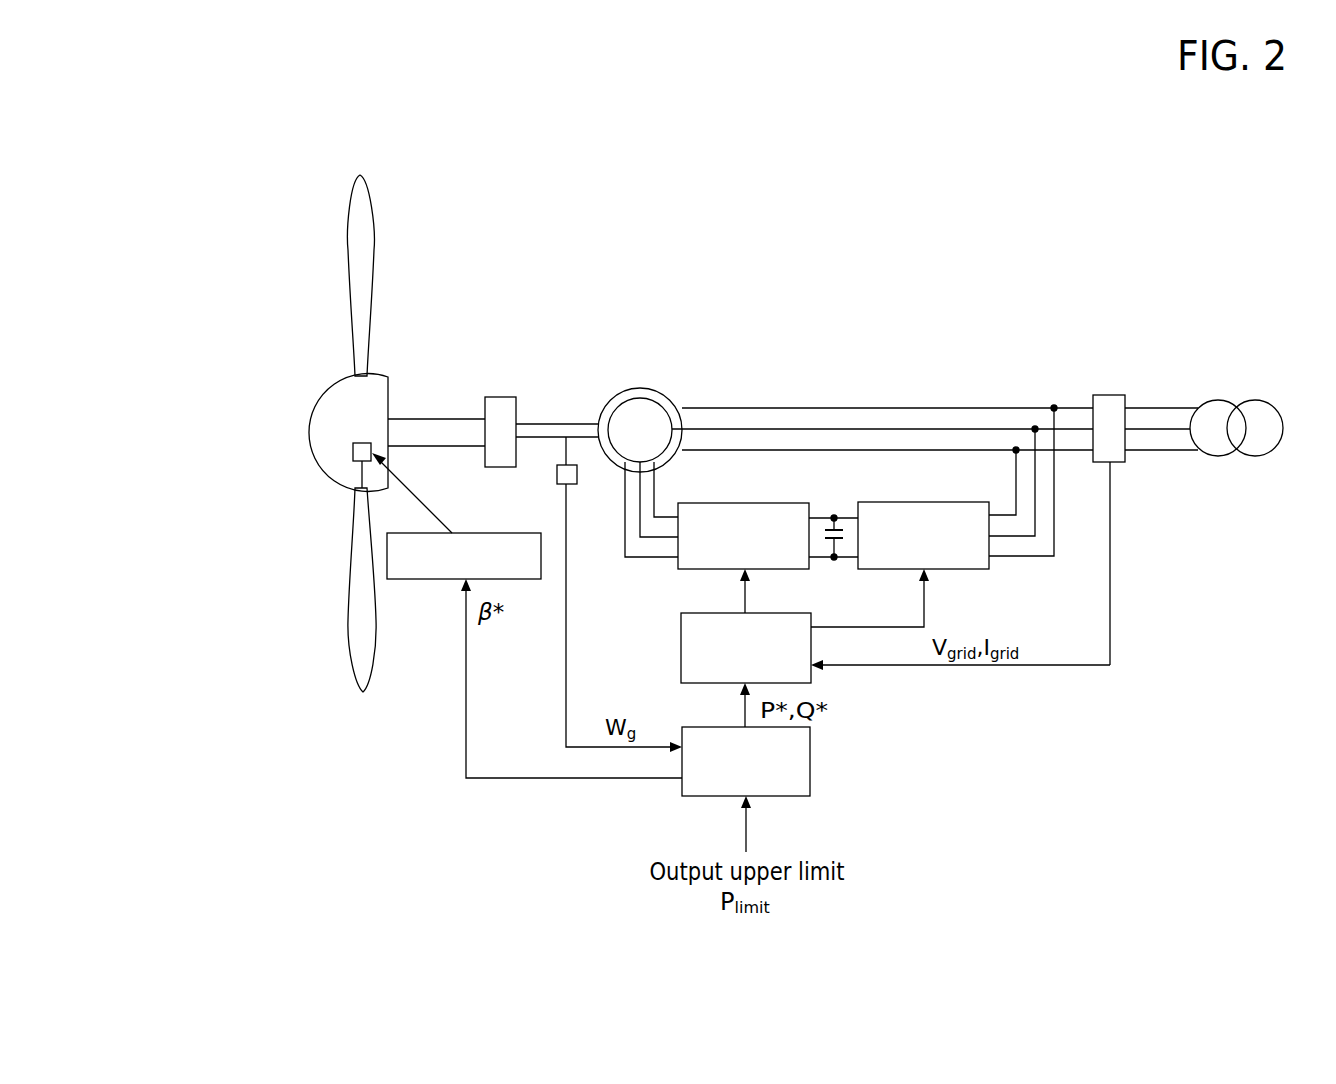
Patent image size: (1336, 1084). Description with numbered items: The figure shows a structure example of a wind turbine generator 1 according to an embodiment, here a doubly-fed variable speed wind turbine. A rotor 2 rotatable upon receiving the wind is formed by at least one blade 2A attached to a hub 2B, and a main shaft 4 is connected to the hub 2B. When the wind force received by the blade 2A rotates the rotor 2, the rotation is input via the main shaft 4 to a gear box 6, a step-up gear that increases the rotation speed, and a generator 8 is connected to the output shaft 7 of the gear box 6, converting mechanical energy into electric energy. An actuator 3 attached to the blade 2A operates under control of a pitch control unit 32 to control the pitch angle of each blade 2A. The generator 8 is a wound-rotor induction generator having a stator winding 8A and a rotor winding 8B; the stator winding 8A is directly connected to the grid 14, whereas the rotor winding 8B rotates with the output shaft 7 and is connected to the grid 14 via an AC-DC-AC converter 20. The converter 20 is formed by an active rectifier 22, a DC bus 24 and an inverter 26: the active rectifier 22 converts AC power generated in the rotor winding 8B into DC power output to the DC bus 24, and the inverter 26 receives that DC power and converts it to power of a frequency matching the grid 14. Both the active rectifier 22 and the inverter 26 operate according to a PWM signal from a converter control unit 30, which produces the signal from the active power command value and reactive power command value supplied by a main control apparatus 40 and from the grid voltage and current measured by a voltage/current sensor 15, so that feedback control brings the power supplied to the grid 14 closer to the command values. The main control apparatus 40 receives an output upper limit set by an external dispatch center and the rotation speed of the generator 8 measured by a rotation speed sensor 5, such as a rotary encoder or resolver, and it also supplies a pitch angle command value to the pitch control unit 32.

The wind turbine generator 1 is at (977, 206).
The rotor 2 is at (204, 346).
The blade 2A is at (345, 247).
The hub 2B is at (311, 458).
The actuator 3 is at (353, 452).
The main shaft 4 is at (445, 420).
The rotation speed sensor 5 is at (567, 486).
The gear box 6 is at (505, 397).
The output shaft 7 is at (556, 424).
The generator 8 is at (735, 340).
The stator winding 8A is at (640, 386).
The rotor winding 8B is at (668, 408).
The grid 14 is at (1228, 400).
The voltage/current sensor 15 is at (1112, 395).
The AC-DC-AC converter 20 is at (820, 462).
The active rectifier 22 is at (742, 503).
The DC bus 24 is at (843, 530).
The inverter 26 is at (900, 502).
The converter control unit 30 is at (811, 675).
The pitch control unit 32 is at (470, 533).
The main control apparatus 40 is at (810, 760).